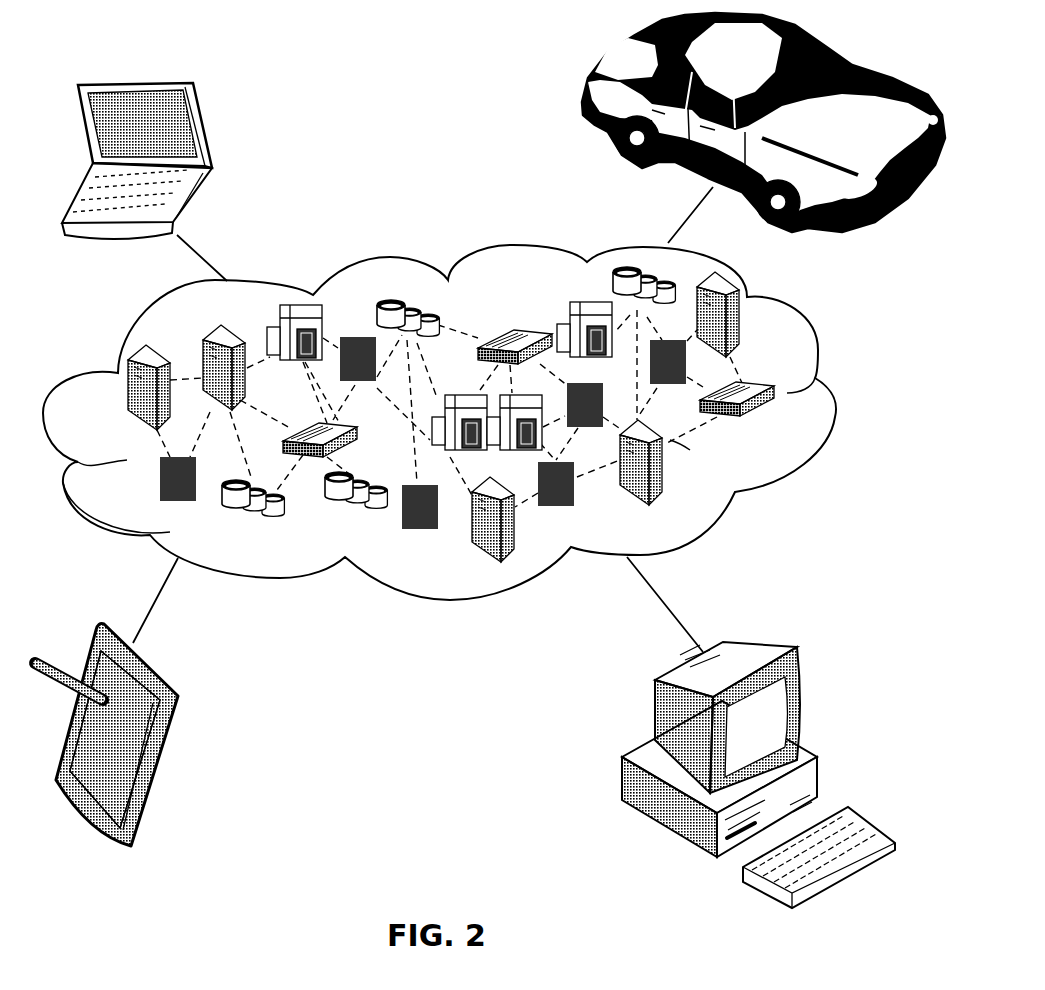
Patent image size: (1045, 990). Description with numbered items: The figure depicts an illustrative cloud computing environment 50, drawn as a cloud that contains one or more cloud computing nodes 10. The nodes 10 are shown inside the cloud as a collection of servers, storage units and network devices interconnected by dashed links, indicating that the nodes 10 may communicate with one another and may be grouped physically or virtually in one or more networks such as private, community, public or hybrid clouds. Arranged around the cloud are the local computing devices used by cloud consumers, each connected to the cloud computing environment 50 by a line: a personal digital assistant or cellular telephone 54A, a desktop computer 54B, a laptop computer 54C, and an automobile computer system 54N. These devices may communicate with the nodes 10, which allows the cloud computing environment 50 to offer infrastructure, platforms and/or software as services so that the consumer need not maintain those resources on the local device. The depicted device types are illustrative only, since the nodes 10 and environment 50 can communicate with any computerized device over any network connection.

The cloud computing node 10 is at (779, 425).
The cloud computing environment 50 is at (836, 398).
The personal digital assistant or cellular telephone 54A is at (170, 728).
The desktop computer 54B is at (767, 640).
The laptop computer 54C is at (207, 128).
The automobile computer system 54N is at (584, 100).